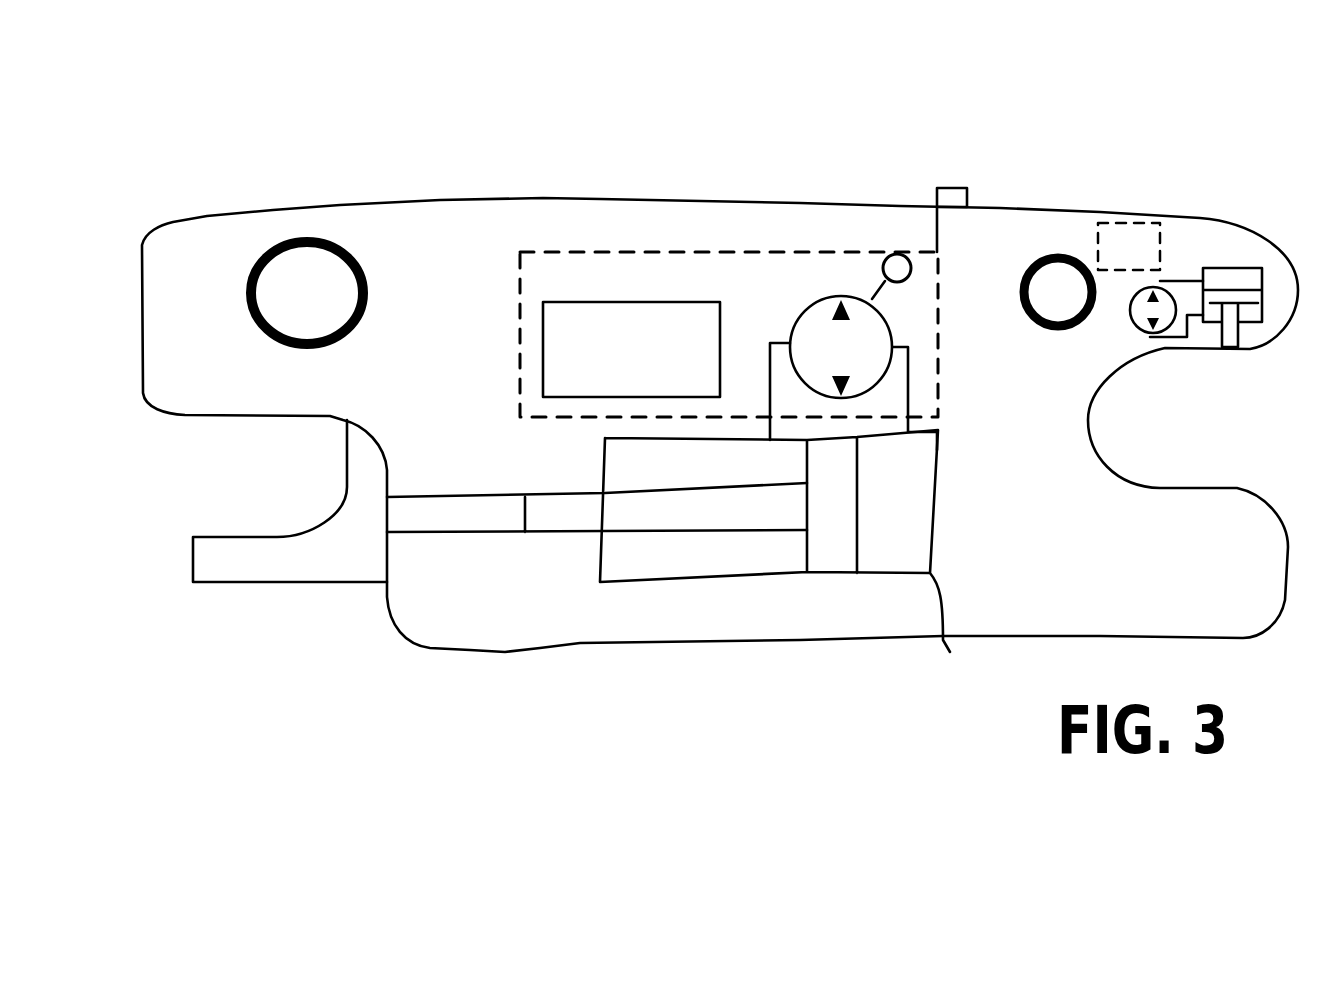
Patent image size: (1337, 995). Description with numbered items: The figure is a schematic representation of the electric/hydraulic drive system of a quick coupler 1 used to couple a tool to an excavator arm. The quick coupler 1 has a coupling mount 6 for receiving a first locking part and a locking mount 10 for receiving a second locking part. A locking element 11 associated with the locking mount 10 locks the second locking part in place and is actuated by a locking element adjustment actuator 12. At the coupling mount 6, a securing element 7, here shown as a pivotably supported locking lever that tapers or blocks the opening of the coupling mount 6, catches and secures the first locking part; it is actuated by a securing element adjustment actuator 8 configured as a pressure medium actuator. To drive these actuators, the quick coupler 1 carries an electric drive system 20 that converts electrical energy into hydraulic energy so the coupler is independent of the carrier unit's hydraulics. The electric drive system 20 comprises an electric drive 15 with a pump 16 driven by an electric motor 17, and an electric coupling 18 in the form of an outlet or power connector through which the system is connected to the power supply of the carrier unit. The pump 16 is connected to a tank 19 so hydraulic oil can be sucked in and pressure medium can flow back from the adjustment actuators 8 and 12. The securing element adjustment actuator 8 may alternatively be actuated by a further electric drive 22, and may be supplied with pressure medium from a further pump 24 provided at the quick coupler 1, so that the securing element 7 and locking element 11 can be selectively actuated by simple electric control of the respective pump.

The quick coupler 1 is at (1082, 153).
The coupling mount 6 is at (1215, 444).
The securing element 7 is at (1215, 350).
The securing element adjustment actuator 8 is at (1252, 268).
The locking mount 10 is at (147, 500).
The locking element 11 is at (253, 572).
The locking element adjustment actuator 12 is at (801, 556).
The electric drive 15 is at (912, 240).
The pump 16 is at (825, 320).
The electric motor 17 is at (897, 254).
The electric coupling 18 is at (955, 188).
The tank 19 is at (652, 318).
The electric drive system 20 is at (940, 324).
The further electric drive 22 is at (1135, 232).
The further pump 24 is at (1132, 320).